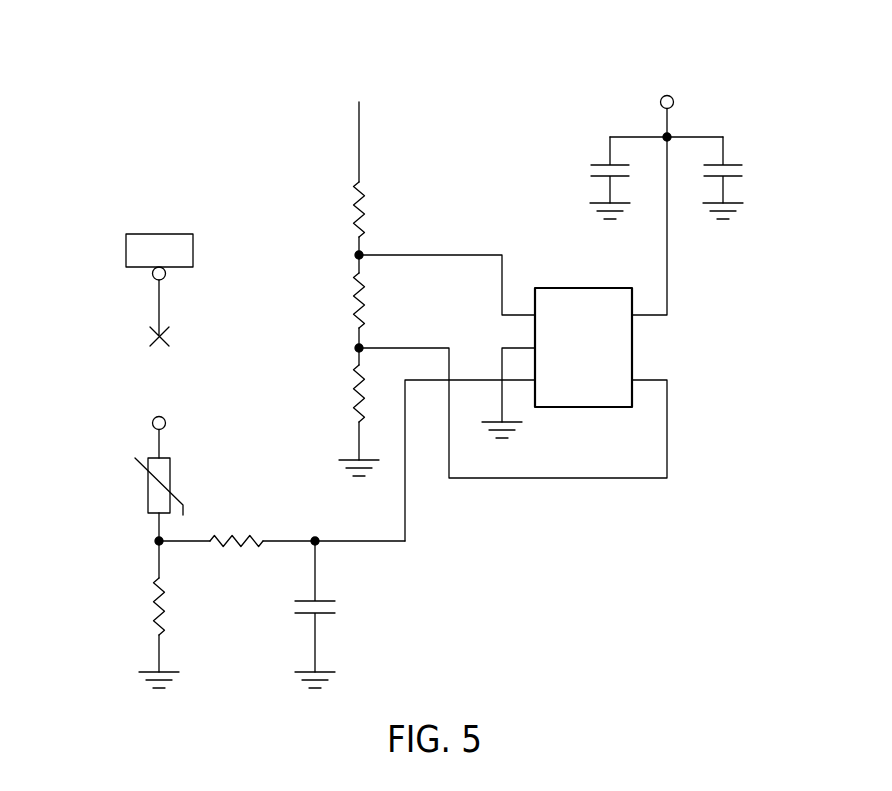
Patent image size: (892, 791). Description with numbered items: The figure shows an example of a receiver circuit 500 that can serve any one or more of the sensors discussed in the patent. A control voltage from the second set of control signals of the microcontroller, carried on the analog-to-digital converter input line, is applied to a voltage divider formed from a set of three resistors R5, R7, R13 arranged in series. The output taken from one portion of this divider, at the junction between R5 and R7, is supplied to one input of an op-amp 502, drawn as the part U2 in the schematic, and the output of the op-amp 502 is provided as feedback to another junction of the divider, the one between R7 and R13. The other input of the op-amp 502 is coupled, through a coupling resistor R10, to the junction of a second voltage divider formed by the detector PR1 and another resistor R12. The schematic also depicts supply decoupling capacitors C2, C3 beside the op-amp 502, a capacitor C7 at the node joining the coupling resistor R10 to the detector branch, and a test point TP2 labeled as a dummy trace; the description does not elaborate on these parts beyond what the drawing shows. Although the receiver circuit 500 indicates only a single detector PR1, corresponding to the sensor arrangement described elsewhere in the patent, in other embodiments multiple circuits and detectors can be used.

The receiver circuit 500 is at (163, 50).
The op-amp 502 is at (616, 330).
The test point dummy trace TP2 is at (160, 255).
The resistor R5 is at (341, 209).
The resistor R7 is at (330, 302).
The resistor R13 is at (336, 393).
The op amp OPA320 U2 is at (583, 330).
The capacitor C2 10u C2 is at (590, 178).
The capacitor C3 100N C3 is at (751, 178).
The detector PR1 is at (127, 487).
The coupling resistor R10 is at (236, 543).
The resistor R12 is at (136, 608).
The capacitor C7 100N C7 is at (343, 614).